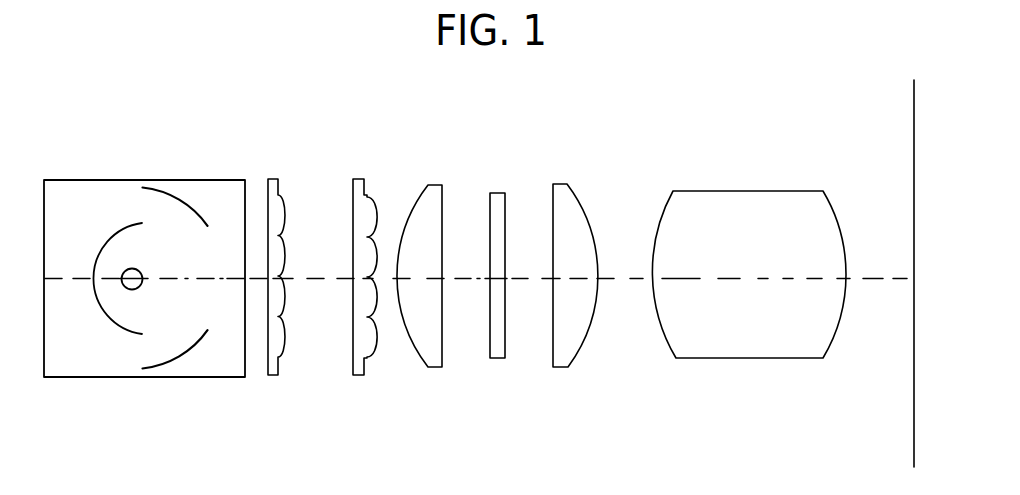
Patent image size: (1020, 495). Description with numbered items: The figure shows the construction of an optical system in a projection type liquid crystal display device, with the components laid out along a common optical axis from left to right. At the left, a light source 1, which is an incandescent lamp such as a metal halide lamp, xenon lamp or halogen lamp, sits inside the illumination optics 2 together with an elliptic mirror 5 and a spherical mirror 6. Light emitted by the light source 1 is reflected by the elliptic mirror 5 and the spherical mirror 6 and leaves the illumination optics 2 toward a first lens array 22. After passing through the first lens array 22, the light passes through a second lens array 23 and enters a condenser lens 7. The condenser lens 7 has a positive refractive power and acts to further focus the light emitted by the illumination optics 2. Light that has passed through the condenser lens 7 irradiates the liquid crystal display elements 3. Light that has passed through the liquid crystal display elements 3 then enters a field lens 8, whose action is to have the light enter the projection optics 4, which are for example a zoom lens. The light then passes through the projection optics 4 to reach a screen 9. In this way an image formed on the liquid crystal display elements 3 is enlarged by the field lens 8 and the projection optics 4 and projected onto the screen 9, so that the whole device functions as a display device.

The light source 1 is at (142, 272).
The illumination optics 2 is at (118, 180).
The liquid crystal display elements 3 is at (497, 192).
The projection optics 4 is at (750, 190).
The elliptic mirror 5 is at (114, 325).
The spherical mirror 6 is at (200, 208).
The condenser lens 7 is at (433, 185).
The field lens 8 is at (560, 184).
The screen 9 is at (913, 115).
The first lens array 22 is at (275, 178).
The second lens array 23 is at (360, 178).